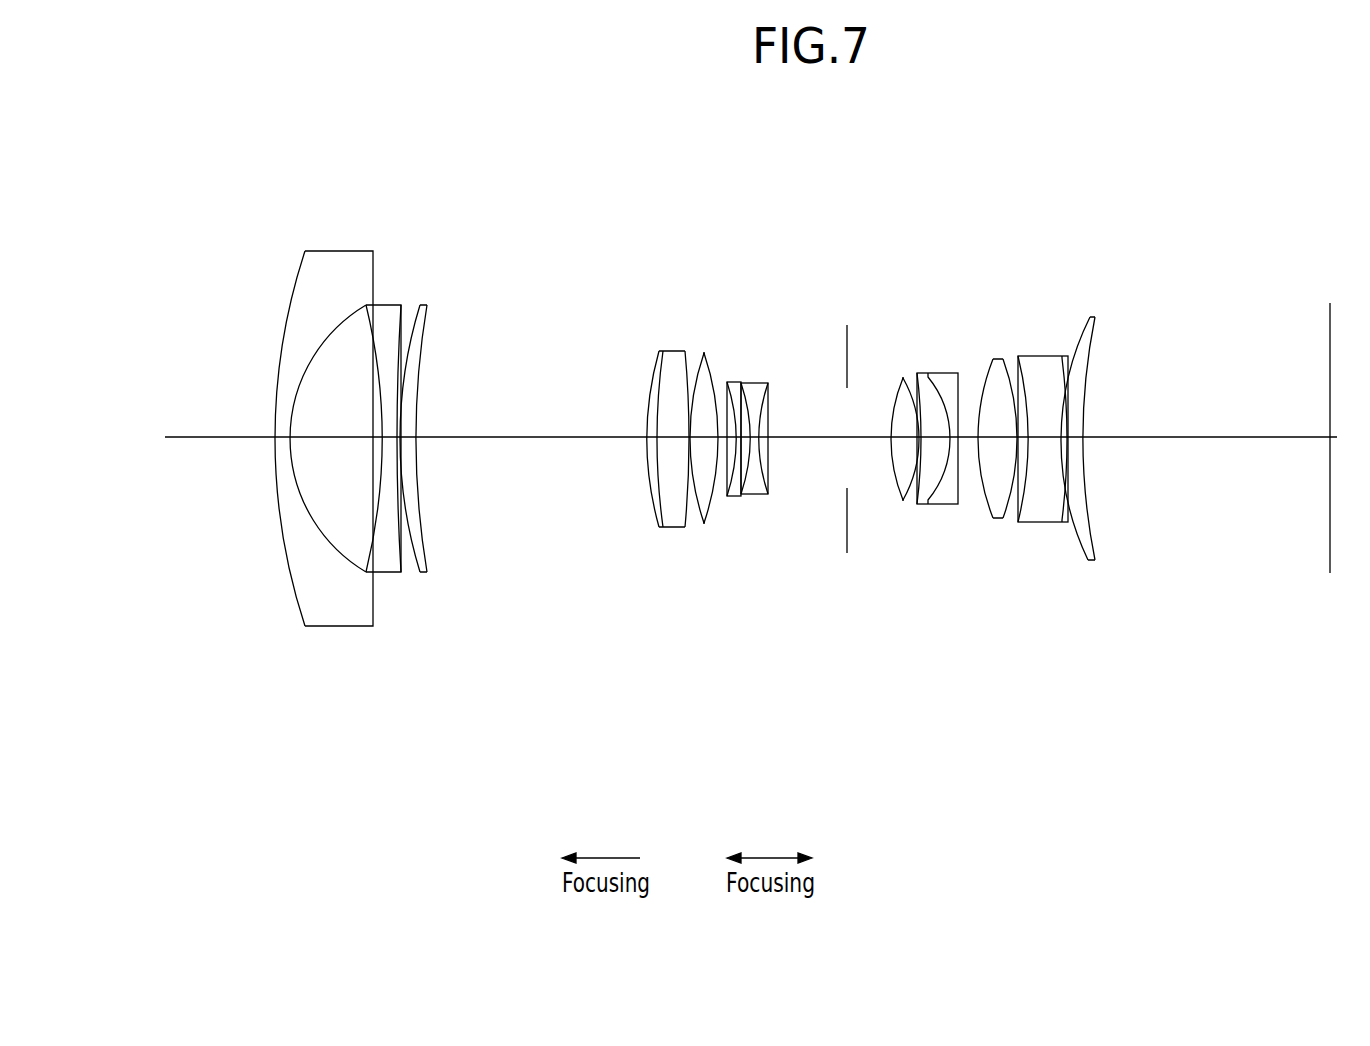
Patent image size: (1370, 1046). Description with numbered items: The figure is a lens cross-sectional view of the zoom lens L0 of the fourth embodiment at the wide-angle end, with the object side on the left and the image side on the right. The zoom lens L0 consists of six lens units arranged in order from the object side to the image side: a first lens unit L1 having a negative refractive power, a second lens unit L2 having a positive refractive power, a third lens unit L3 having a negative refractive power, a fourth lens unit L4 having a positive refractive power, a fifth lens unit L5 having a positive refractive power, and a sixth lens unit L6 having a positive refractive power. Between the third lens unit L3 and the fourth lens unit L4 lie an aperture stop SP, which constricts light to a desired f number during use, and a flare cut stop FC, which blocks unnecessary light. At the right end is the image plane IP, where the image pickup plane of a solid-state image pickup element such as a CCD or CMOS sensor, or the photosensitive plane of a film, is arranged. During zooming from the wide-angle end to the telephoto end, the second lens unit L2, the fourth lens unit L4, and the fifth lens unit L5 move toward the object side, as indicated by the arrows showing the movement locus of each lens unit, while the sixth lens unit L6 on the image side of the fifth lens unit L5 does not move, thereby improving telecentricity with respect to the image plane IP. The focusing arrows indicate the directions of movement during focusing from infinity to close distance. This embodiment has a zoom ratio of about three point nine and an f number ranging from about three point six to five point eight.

The zoom lens L0 is at (268, 205).
The first lens unit L1 is at (349, 836).
The second lens unit L2 is at (569, 816).
The third lens unit L3 is at (728, 813).
The fourth lens unit L4 is at (809, 816).
The fifth lens unit L5 is at (867, 817).
The sixth lens unit L6 is at (1097, 817).
The aperture stop SP is at (847, 357).
The flare cut stop FC is at (850, 345).
The image plane IP is at (1330, 328).